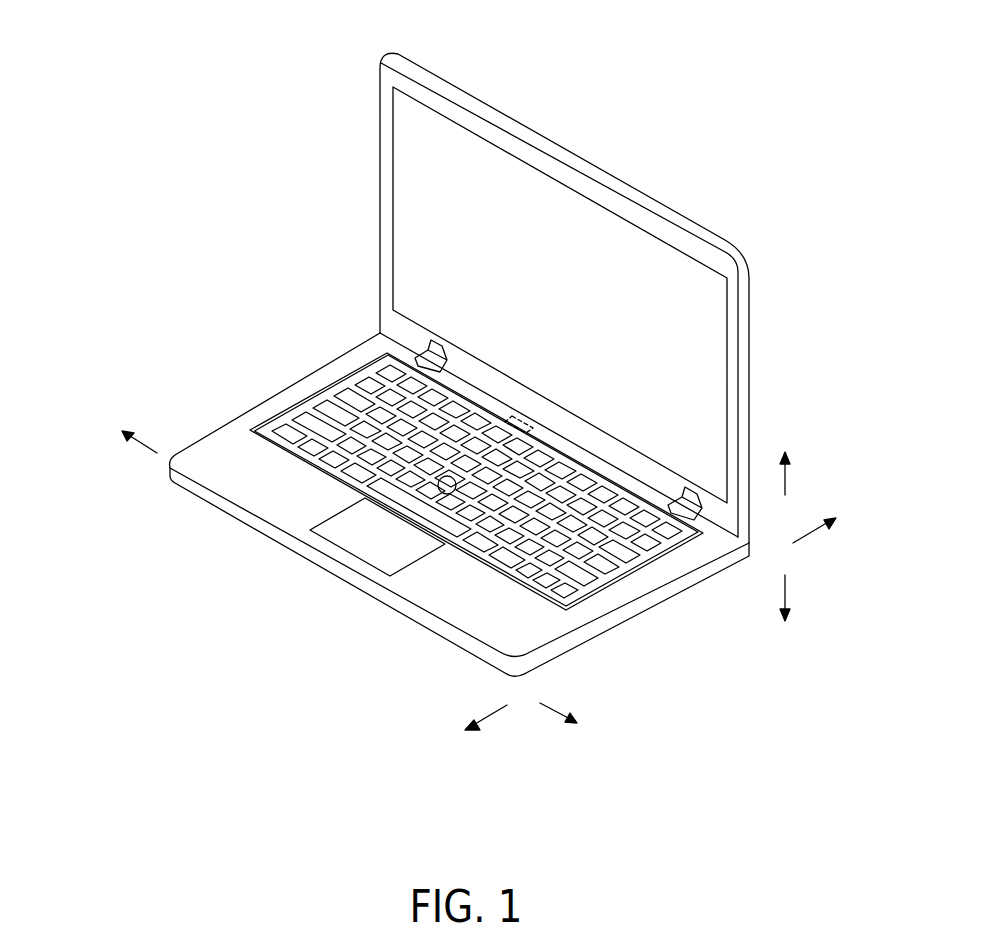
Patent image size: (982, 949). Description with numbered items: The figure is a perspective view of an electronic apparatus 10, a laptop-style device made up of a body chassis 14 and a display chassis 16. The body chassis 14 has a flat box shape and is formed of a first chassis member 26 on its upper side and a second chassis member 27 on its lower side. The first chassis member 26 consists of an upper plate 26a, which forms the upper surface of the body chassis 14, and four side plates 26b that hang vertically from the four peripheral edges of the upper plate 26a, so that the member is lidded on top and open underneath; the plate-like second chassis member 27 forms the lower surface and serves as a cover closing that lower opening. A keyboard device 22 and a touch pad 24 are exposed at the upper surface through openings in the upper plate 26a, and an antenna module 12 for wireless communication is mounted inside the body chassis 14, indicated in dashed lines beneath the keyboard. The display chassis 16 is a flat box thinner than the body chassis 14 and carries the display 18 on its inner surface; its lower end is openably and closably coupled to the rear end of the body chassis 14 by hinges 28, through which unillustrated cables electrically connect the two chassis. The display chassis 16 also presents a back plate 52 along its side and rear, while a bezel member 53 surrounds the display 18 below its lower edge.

The electronic apparatus 10 is at (327, 32).
The antenna module 12 is at (535, 405).
The body chassis 14 is at (507, 500).
The display chassis 16 is at (657, 197).
The display 18 is at (667, 273).
The keyboard device 22 is at (298, 412).
The touch pad 24 is at (347, 545).
The first chassis member 26 is at (433, 610).
The upper plate 26a is at (217, 480).
The side plates 26b is at (253, 527).
The second chassis member 27 is at (440, 648).
The hinges 28 is at (432, 340).
The back plate 52 is at (751, 318).
The bezel member 53 is at (475, 364).